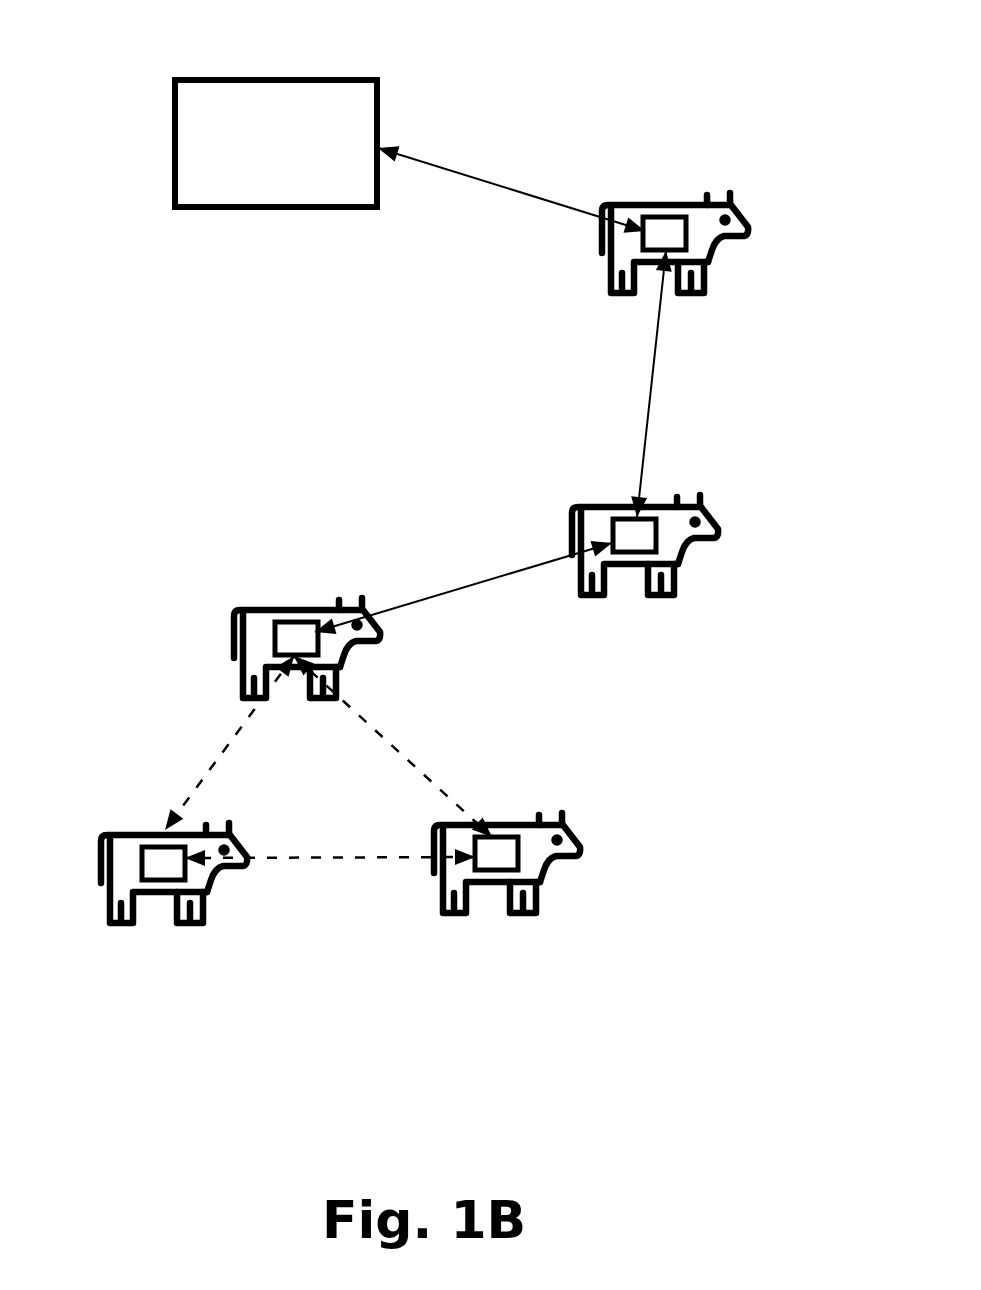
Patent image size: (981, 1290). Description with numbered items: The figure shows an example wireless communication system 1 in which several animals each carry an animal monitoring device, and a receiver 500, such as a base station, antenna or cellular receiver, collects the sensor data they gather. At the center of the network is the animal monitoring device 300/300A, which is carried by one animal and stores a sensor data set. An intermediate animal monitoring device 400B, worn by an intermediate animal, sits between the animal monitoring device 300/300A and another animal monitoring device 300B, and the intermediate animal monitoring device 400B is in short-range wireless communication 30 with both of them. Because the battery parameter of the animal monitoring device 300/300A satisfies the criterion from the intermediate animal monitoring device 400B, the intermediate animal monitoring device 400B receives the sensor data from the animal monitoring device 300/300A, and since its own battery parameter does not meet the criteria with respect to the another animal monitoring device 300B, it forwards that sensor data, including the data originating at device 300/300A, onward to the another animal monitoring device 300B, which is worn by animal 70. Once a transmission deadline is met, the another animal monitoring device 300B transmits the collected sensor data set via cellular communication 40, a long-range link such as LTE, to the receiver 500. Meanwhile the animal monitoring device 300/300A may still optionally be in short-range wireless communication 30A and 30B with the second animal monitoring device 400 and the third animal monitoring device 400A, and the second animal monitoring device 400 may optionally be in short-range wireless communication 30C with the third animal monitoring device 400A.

The wireless communication system 1 is at (197, 45).
The receiver 500 is at (178, 122).
The cellular communication 40 is at (500, 182).
The animal 70 is at (704, 243).
The another animal monitoring device 300B is at (674, 231).
The short-range wireless communication 30 is at (650, 383).
The intermediate animal monitoring device 400B is at (672, 580).
The animal monitoring device 300 is at (262, 609).
The animal monitoring device 300A is at (287, 628).
The short-range wireless communication 30B is at (210, 762).
The short-range wireless communication 30A is at (377, 725).
The short-range wireless communication 30C is at (335, 855).
The second animal monitoring device 400 is at (155, 872).
The third animal monitoring device 400A is at (503, 847).